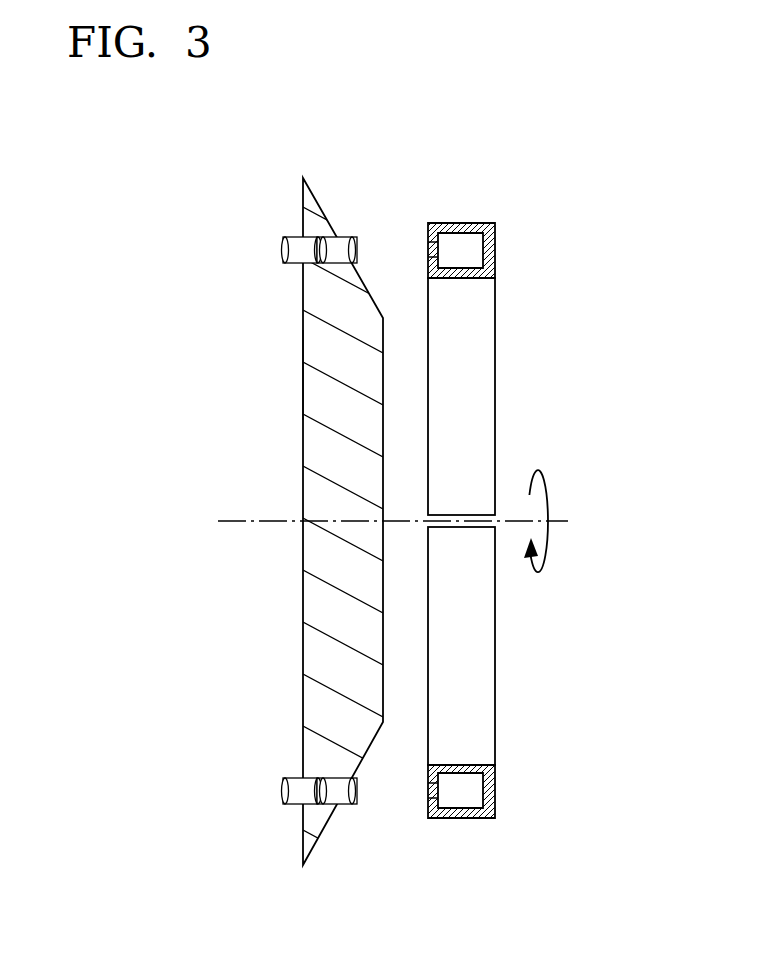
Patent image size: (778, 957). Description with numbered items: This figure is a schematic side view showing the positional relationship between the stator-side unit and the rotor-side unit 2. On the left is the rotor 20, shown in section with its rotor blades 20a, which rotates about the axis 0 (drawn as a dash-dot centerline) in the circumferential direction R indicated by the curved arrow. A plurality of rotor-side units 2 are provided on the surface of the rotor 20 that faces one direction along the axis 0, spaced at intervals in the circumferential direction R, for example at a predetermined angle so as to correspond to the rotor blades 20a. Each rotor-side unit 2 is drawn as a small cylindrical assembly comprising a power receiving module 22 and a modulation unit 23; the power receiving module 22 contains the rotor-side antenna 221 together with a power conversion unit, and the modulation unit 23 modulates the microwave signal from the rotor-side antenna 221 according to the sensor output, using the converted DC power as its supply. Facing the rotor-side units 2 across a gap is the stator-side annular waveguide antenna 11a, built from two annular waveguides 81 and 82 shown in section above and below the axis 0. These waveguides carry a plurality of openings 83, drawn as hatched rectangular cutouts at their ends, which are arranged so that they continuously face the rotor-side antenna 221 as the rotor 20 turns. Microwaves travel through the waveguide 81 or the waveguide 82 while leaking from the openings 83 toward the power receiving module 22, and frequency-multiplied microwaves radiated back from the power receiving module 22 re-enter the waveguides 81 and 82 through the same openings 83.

The rotor-side unit 2 is at (301, 209).
The rotor 20 is at (257, 405).
The rotor blade 20a is at (302, 372).
The power receiving module 22 is at (343, 237).
The modulation unit 23 is at (291, 237).
The rotor-side antenna 221 is at (334, 245).
The annular waveguide antenna 11a is at (503, 523).
The annular waveguide 81 is at (497, 330).
The annular waveguide 82 is at (497, 720).
The opening 83 is at (432, 244).
The axis 0 is at (560, 521).
The circumferential direction R is at (545, 562).